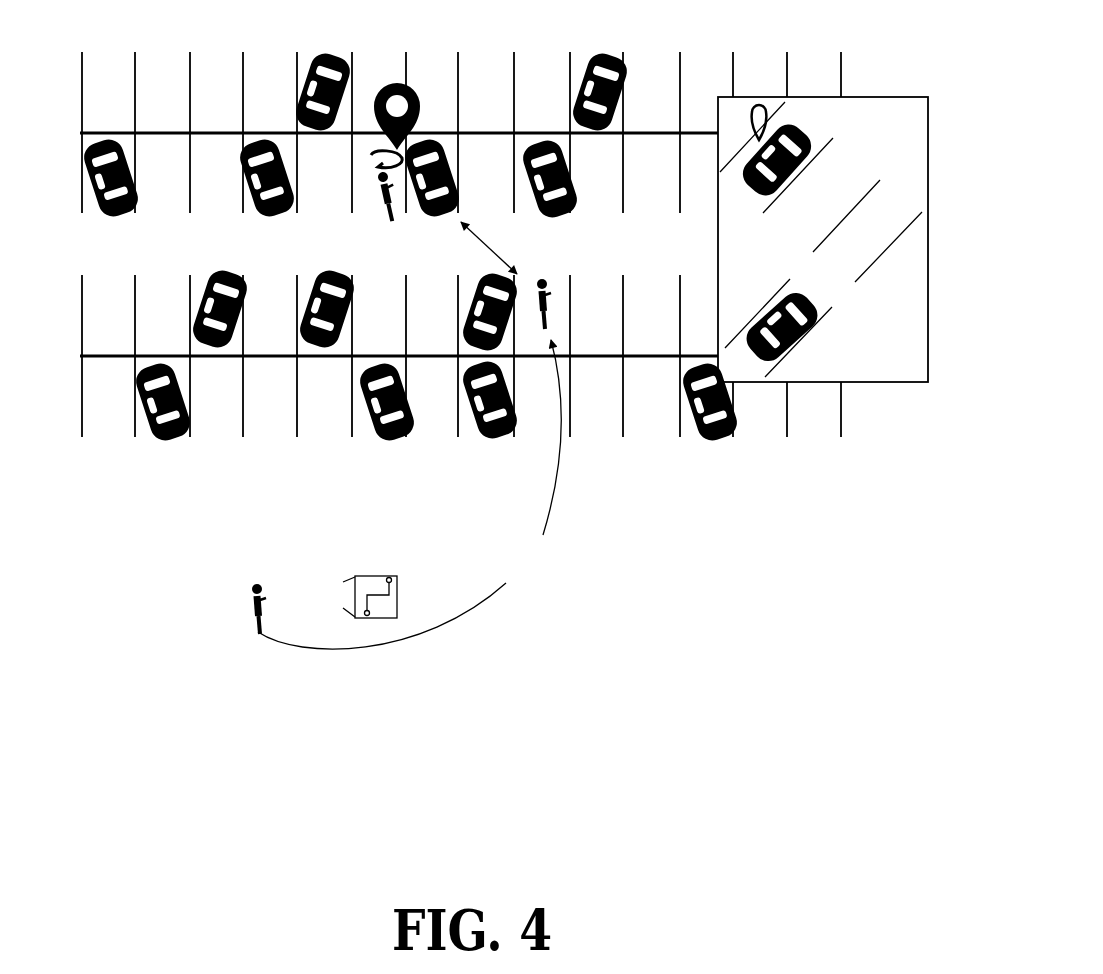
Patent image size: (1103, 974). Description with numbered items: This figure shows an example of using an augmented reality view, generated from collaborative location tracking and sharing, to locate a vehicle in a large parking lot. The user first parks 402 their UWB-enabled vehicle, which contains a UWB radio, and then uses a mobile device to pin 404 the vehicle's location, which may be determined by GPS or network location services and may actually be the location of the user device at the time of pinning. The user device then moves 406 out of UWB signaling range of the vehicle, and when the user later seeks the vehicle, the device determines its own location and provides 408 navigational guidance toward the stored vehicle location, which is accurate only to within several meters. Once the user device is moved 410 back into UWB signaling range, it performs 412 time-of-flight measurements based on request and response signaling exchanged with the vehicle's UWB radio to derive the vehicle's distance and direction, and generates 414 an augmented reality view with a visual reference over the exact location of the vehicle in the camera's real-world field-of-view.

The parking of the vehicle 402 is at (425, 224).
The pinning of the vehicle location 404 is at (397, 87).
The movement of the user device out of UWB range 406 is at (393, 218).
The provision of navigational guidance 408 is at (265, 594).
The movement of the user device into UWB range 410 is at (409, 494).
The performance of ToF measurements 412 is at (742, 131).
The generation of the augmented reality view 414 is at (559, 287).